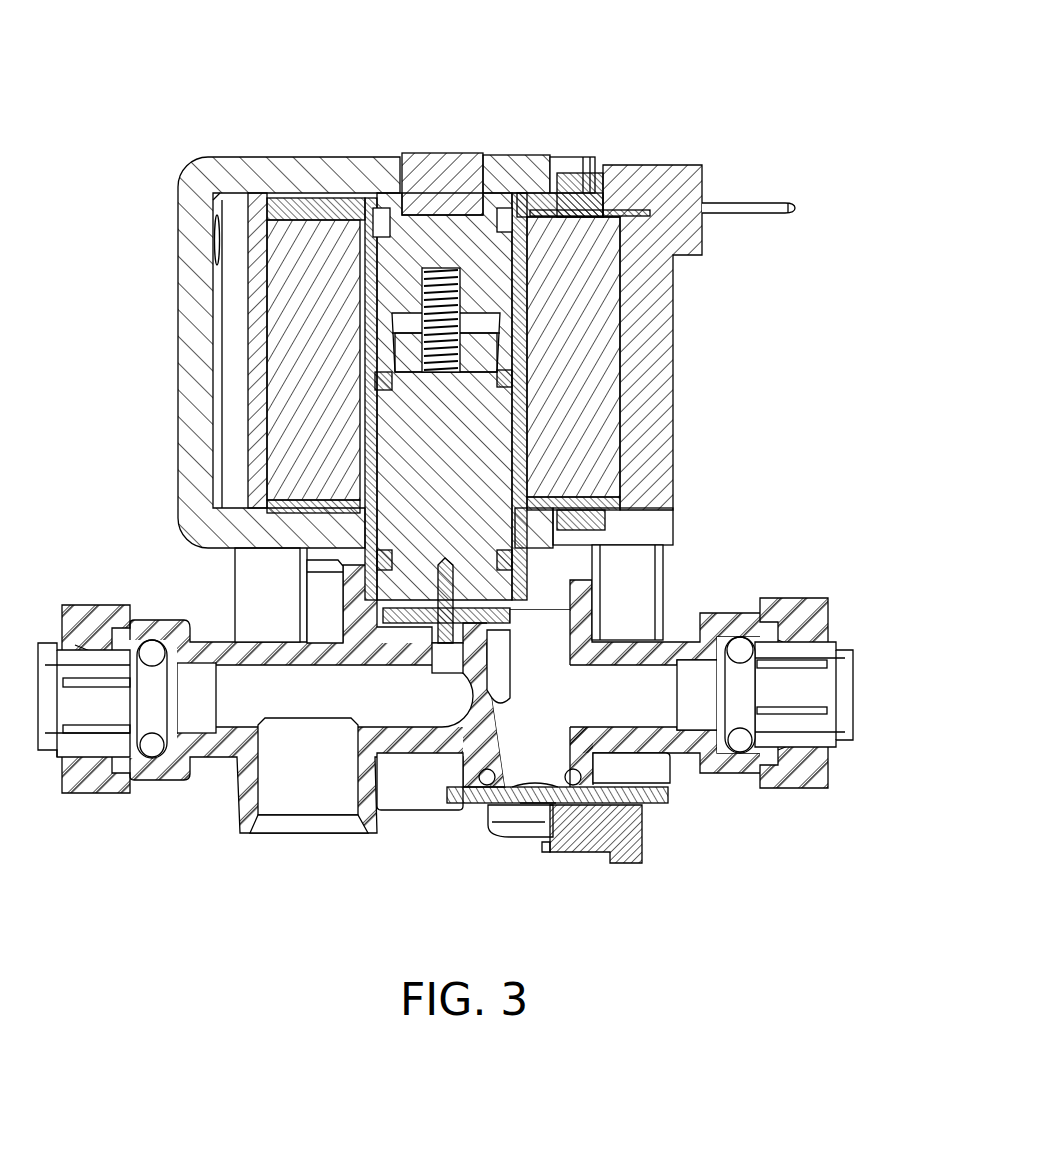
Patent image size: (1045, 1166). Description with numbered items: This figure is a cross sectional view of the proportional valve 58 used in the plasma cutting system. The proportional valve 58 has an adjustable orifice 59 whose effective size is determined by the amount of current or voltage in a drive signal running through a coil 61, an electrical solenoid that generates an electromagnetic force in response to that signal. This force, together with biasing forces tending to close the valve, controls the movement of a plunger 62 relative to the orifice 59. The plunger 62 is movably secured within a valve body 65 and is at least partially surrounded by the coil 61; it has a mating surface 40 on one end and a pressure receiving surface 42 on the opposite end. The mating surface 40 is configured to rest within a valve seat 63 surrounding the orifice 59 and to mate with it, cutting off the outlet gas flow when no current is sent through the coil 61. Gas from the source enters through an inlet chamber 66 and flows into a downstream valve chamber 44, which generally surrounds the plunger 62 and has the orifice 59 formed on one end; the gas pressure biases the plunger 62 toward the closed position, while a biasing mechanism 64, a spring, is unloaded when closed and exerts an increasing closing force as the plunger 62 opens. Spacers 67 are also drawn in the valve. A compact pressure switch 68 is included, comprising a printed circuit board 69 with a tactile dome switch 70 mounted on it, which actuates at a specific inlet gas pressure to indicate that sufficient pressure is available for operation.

The proportional valve 58 is at (674, 66).
The valve body 65 is at (474, 152).
The biasing mechanism 64 is at (450, 268).
The pressure receiving surface 42 is at (408, 335).
The valve chamber 44 is at (482, 325).
The coil 61 is at (326, 365).
The spacer 67 is at (388, 388).
The plunger 62 is at (453, 478).
The valve seat 63 is at (462, 633).
The mating surface 40 is at (428, 628).
The adjustable orifice 59 is at (441, 664).
The inlet chamber 66 is at (638, 709).
The tactile dome switch 70 is at (536, 782).
The pressure switch 68 is at (508, 869).
The printed circuit board 69 is at (575, 852).